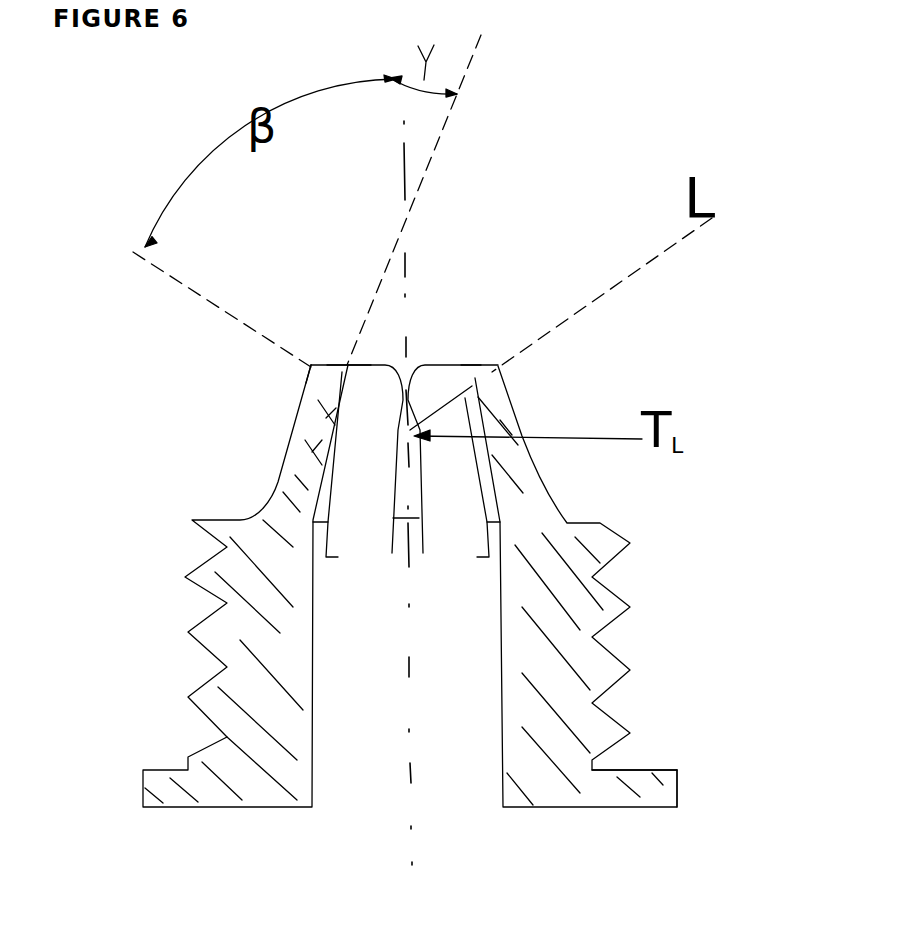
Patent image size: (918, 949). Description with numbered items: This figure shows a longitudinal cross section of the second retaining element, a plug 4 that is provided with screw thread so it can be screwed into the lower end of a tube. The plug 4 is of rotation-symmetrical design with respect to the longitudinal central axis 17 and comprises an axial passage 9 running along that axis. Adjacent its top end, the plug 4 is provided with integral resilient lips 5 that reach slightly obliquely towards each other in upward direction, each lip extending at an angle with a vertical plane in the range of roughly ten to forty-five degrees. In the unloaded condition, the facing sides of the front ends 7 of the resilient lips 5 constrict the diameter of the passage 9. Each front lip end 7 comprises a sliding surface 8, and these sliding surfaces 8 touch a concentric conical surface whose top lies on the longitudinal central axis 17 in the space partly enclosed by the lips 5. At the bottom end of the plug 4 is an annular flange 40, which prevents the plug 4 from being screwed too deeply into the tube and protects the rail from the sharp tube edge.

The plug 4 is at (695, 591).
The resilient lips 5 is at (433, 392).
The front ends 7 is at (313, 367).
The sliding surface 8 is at (371, 362).
The axial passage 9 is at (363, 653).
The longitudinal central axis 17 is at (414, 880).
The annular flange 40 is at (660, 792).